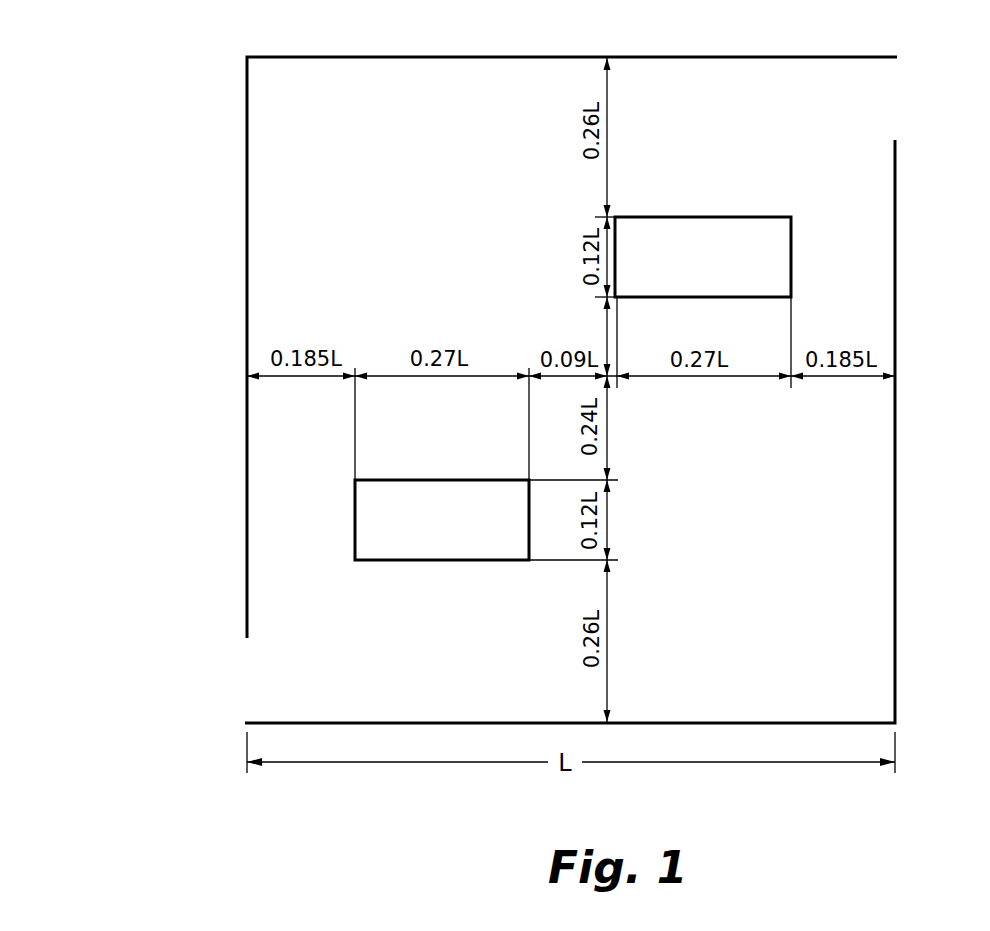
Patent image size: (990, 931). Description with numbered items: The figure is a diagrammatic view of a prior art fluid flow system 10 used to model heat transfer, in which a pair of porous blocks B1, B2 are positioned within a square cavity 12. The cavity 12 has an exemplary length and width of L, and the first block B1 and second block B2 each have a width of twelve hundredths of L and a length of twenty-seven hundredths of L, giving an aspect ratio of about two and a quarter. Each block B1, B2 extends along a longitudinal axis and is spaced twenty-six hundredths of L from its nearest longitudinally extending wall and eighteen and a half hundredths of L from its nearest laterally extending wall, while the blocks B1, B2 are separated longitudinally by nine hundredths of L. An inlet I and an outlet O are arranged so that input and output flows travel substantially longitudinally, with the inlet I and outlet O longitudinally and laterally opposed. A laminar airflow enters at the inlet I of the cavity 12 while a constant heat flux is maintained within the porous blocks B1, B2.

The fluid flow system 10 is at (64, 86).
The square cavity 12 is at (895, 503).
The first block B1 is at (320, 520).
The second block B2 is at (826, 202).
The inlet I is at (252, 681).
The outlet O is at (925, 95).